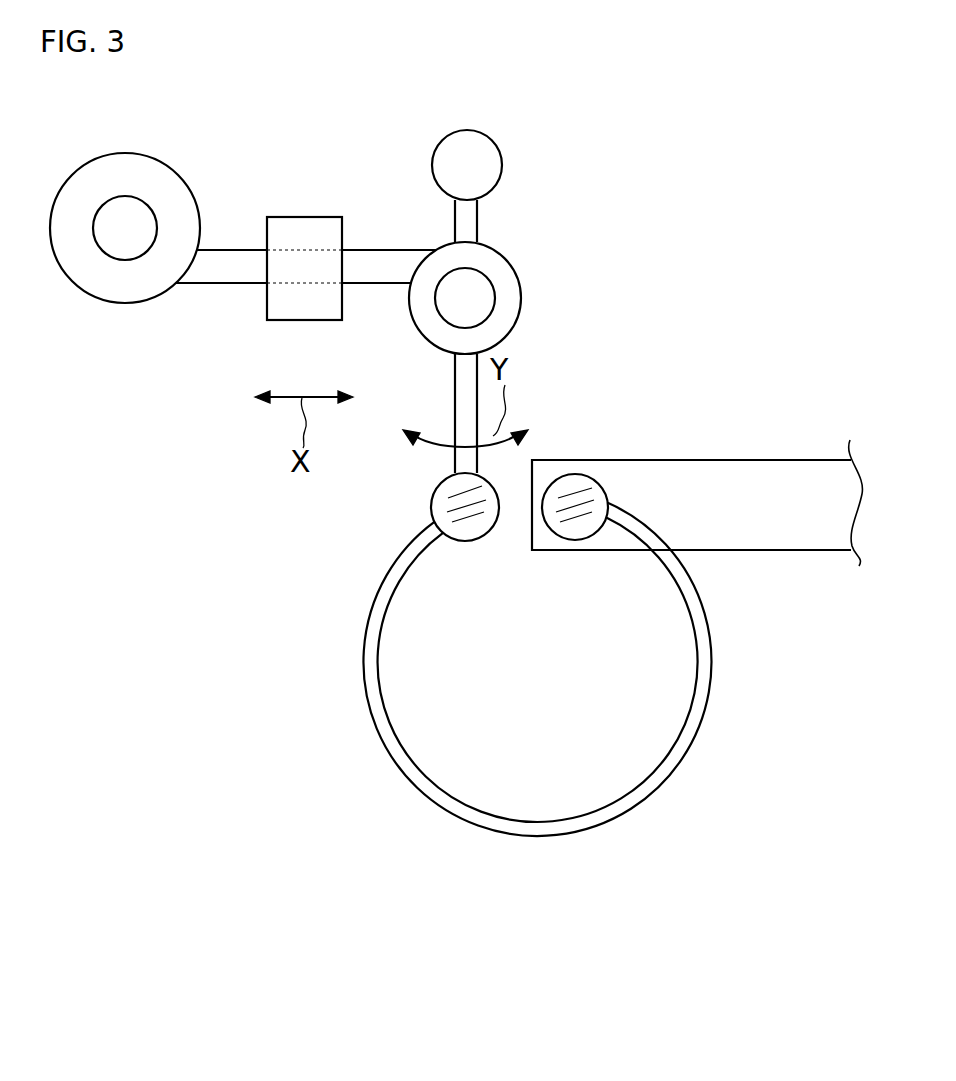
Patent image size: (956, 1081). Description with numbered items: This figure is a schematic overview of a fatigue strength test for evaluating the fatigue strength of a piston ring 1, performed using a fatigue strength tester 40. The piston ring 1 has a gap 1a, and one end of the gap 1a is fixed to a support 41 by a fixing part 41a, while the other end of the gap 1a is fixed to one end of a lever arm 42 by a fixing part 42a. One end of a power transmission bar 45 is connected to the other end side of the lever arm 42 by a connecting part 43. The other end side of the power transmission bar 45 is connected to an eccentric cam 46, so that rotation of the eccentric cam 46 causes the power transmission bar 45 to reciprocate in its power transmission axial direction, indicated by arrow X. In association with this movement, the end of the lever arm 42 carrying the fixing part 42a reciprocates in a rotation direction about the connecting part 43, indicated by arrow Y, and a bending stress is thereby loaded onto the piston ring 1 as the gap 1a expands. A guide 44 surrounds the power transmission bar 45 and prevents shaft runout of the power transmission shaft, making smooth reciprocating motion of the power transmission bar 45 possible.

The piston ring 1 is at (712, 661).
The gap 1a is at (517, 501).
The fatigue strength tester 40 is at (703, 218).
The support 41 is at (752, 460).
The fixing part 41a is at (577, 474).
The lever arm 42 is at (450, 218).
The fixing part 42a is at (430, 510).
The connecting part 43 is at (508, 260).
The guide 44 is at (304, 216).
The power transmission bar 45 is at (225, 287).
The eccentric cam 46 is at (122, 304).